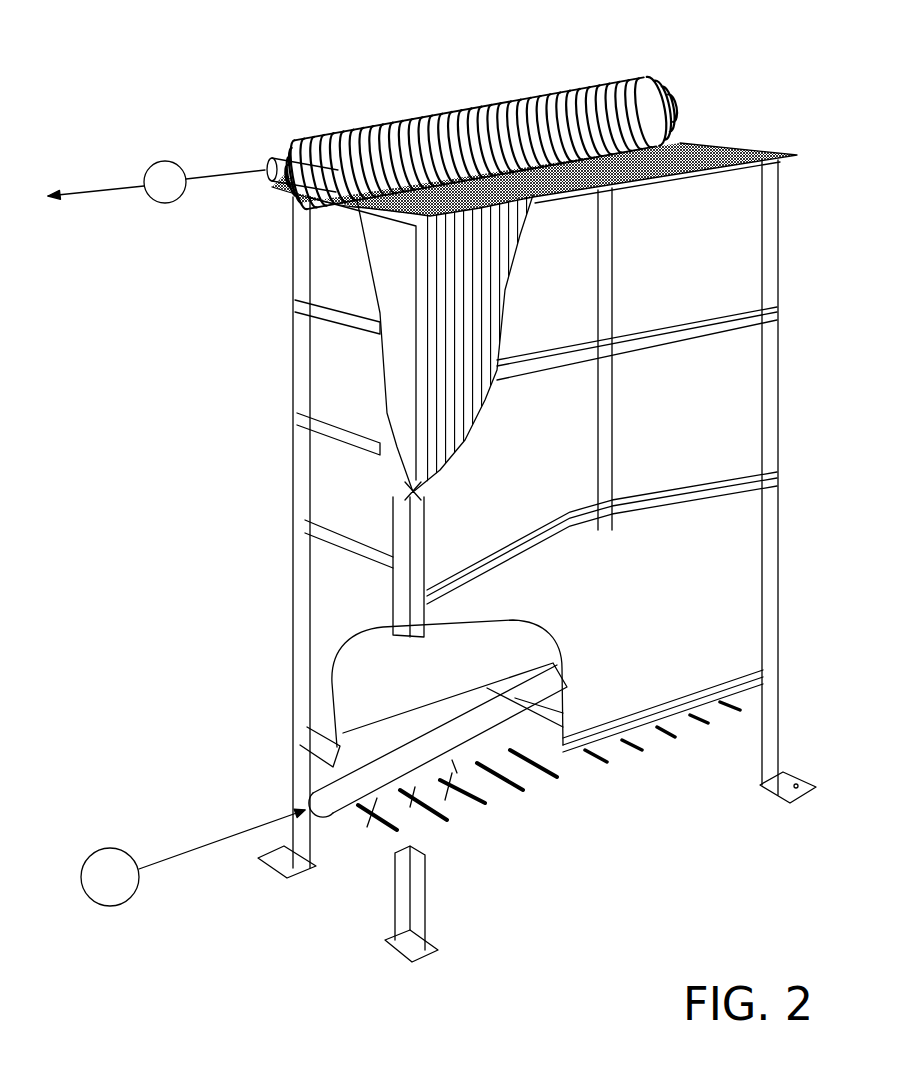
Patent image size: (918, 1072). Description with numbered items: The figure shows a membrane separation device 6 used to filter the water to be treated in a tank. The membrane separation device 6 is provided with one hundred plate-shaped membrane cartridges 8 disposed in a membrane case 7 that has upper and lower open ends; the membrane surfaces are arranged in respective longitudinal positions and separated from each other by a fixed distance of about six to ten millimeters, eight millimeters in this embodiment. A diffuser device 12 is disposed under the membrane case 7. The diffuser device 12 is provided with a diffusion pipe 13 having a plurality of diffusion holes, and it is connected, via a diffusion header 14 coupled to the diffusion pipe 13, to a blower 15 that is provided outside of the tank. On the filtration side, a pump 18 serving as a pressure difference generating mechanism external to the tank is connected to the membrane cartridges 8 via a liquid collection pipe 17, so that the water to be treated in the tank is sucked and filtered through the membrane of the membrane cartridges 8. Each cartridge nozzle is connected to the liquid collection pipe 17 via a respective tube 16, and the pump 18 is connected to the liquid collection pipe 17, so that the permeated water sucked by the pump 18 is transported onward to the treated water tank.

The membrane separation device 6 is at (813, 362).
The membrane case 7 is at (760, 243).
The membrane cartridge 8 is at (524, 237).
The diffuser device 12 is at (524, 799).
The diffusion pipe 13 is at (545, 772).
The diffusion header 14 is at (493, 760).
The blower 15 is at (110, 907).
The tube 16 is at (373, 118).
The liquid collection pipe 17 is at (273, 157).
The pump 18 is at (167, 161).